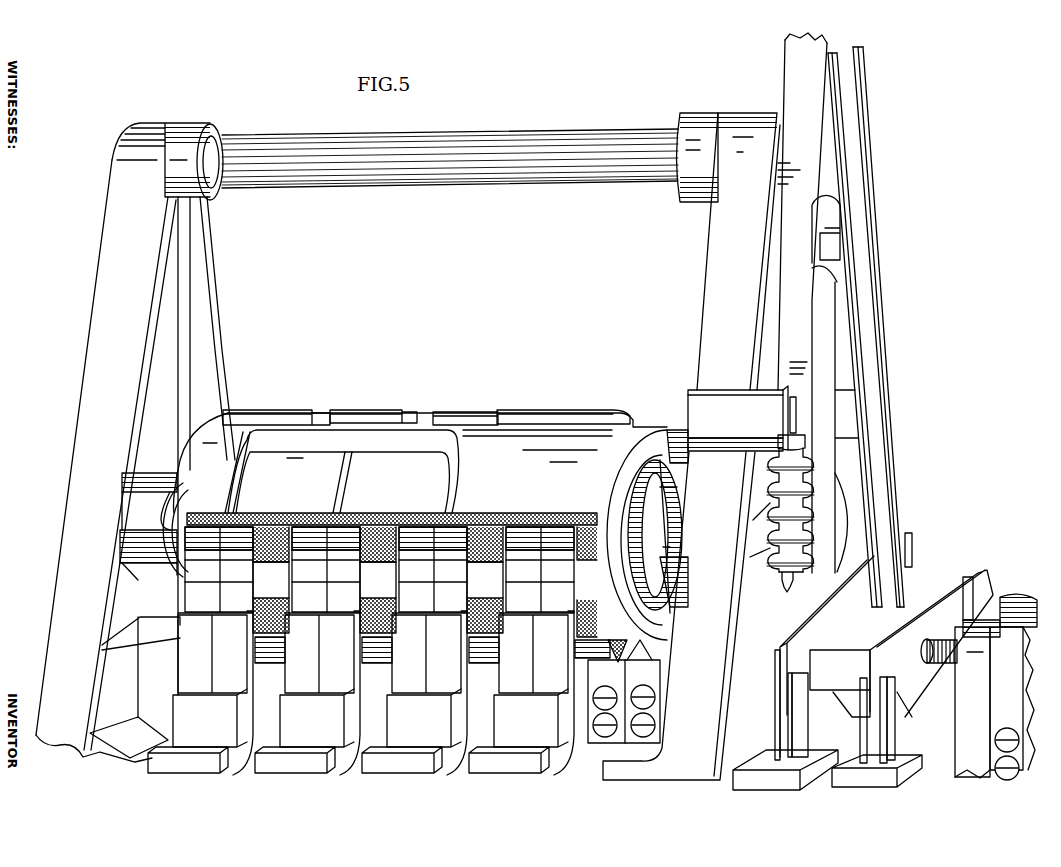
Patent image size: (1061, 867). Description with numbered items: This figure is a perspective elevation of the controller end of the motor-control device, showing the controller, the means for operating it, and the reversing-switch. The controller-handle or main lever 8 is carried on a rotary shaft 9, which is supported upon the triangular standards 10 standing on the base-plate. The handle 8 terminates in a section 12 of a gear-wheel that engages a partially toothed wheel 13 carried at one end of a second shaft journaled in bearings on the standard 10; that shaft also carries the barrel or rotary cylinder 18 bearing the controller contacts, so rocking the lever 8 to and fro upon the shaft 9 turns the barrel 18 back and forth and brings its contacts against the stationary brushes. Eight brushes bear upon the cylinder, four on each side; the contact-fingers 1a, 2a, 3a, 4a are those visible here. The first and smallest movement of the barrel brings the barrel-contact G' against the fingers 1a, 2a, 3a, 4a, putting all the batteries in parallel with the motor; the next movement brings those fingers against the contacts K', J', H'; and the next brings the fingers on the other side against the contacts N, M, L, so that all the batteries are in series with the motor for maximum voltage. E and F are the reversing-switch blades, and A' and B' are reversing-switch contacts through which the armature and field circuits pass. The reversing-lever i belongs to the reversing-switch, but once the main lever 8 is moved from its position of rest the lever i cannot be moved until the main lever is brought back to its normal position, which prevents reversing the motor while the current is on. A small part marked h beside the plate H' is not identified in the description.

The controller-handle 8 is at (818, 303).
The rotary shaft 9 is at (487, 163).
The triangular standards 10 is at (421, 446).
The gear-wheel section 12 is at (809, 417).
The partially toothed wheel 13 is at (807, 513).
The barrel 18 is at (465, 403).
The reversing-lever i is at (866, 327).
The controller-barrel contact N is at (245, 412).
The controller-barrel contact M is at (355, 416).
The controller-barrel contact L is at (497, 414).
The barrel-contact G' is at (378, 580).
The contact-finger 4a is at (200, 651).
The contact-finger 3a is at (307, 651).
The contact-finger 2a is at (414, 651).
The contact-finger 1a is at (521, 651).
The barrel contact K' is at (270, 664).
The barrel contact J' is at (377, 664).
The barrel contact H' is at (564, 689).
The bracket h is at (630, 659).
The reversing-switch blade E is at (846, 656).
The reversing-switch blade F is at (931, 625).
The reversing-switch contact B' is at (785, 720).
The reversing-switch contact A' is at (877, 732).